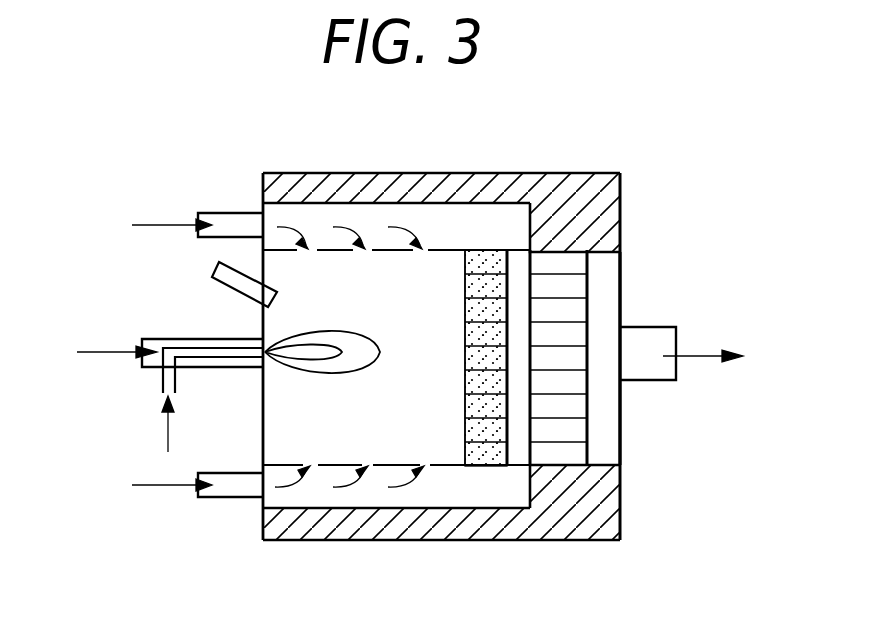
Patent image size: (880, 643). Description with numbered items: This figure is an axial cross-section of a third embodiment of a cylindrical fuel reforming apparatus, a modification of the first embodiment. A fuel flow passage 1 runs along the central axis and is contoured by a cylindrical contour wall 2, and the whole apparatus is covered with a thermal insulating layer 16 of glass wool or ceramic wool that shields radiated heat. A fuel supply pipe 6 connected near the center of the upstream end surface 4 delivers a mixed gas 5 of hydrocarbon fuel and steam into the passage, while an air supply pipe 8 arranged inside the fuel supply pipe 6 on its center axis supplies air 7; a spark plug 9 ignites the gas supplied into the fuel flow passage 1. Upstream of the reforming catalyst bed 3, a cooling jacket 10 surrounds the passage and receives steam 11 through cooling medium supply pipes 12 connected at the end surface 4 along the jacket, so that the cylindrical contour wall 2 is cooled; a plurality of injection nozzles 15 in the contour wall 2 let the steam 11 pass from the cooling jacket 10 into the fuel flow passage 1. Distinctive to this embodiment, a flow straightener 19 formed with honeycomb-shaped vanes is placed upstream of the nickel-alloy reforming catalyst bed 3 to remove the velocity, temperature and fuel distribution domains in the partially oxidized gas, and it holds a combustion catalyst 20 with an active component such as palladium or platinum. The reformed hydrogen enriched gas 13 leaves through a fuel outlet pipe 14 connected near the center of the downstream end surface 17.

The fuel flow passage 1 is at (427, 366).
The cylindrical contour wall 2 is at (270, 262).
The reforming catalyst bed 3 is at (573, 310).
The end surface 4 is at (262, 313).
The mixed gas 5 is at (95, 353).
The fuel supply pipe 6 is at (142, 339).
The air 7 is at (168, 438).
The air supply pipe 8 is at (165, 376).
The spark plug 9 is at (212, 277).
The cooling jacket 10 is at (340, 220).
The steam 11 is at (158, 223).
The cooling medium supply pipes 12 is at (227, 212).
The hydrogen enriched gas 13 is at (708, 352).
The fuel outlet pipe 14 is at (670, 380).
The injection nozzles 15 is at (306, 248).
The thermal insulating layer 16 is at (545, 195).
The end surface 17 is at (620, 420).
The flow straightener 19 is at (484, 258).
The combustion catalyst 20 is at (485, 460).